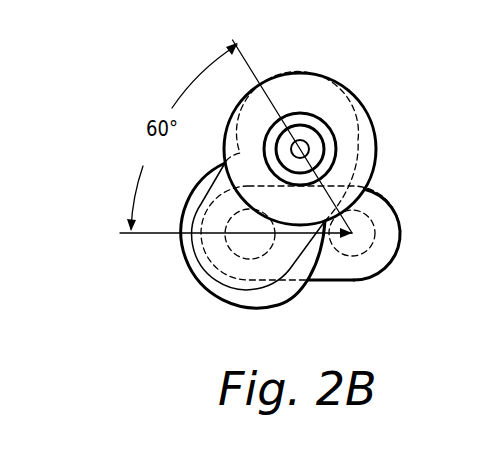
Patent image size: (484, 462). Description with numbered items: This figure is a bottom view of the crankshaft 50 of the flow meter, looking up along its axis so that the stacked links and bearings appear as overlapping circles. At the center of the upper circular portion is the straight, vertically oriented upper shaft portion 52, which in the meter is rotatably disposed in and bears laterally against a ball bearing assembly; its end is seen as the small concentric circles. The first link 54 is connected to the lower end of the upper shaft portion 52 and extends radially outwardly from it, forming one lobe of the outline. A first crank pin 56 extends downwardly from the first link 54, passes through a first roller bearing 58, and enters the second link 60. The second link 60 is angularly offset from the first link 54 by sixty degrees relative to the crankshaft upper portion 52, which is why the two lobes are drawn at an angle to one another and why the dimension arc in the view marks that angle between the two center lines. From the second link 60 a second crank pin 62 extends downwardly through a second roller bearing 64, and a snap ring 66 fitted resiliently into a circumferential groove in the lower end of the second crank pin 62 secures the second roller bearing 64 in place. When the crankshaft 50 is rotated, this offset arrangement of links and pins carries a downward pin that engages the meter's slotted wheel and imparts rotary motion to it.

The crankshaft 50 is at (393, 200).
The upper shaft portion 52 is at (377, 242).
The first link 54 is at (322, 284).
The first crank pin 56 is at (213, 282).
The first roller bearing 58 is at (181, 250).
The second link 60 is at (250, 290).
The second crank pin 62 is at (313, 132).
The second roller bearing 64 is at (378, 148).
The snap ring 66 is at (303, 114).